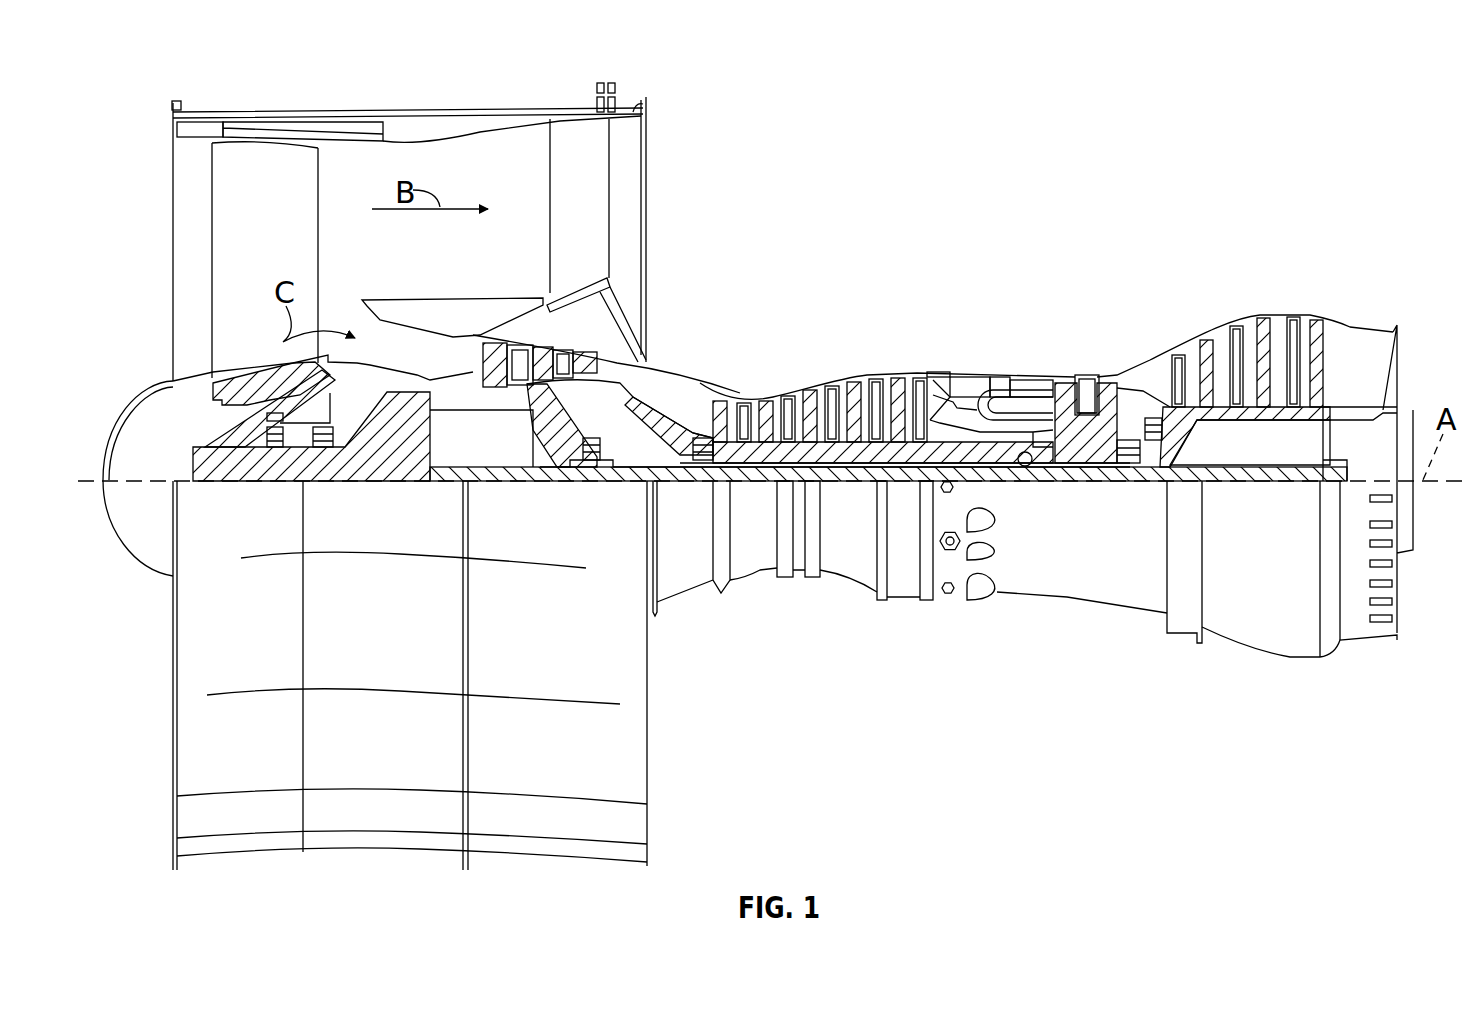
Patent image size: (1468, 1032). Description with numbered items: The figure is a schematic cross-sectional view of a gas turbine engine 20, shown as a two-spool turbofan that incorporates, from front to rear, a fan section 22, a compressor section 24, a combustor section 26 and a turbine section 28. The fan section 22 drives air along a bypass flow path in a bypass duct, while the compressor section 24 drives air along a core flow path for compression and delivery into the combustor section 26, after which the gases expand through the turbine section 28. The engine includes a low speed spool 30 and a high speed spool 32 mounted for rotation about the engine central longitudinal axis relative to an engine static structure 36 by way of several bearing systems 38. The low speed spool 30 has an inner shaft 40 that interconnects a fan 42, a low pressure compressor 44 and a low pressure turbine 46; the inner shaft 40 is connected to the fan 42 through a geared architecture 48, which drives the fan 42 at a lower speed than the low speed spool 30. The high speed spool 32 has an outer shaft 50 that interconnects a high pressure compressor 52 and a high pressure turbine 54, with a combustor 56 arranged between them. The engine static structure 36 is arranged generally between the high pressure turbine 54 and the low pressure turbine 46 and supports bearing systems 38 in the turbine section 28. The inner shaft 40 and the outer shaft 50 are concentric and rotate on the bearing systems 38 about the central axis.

The gas turbine engine 20 is at (1222, 147).
The fan section 22 is at (278, 100).
The compressor section 24 is at (887, 362).
The combustor section 26 is at (990, 353).
The turbine section 28 is at (1247, 363).
The low speed spool 30 is at (866, 488).
The high speed spool 32 is at (917, 420).
The engine static structure 36 is at (905, 603).
The bearing systems 38 is at (273, 442).
The inner shaft 40 is at (660, 477).
The fan 42 is at (292, 245).
The low pressure compressor 44 is at (560, 358).
The low pressure turbine 46 is at (1255, 338).
The geared architecture 48 is at (413, 445).
The outer shaft 50 is at (1031, 466).
The high pressure compressor 52 is at (827, 447).
The high pressure turbine 54 is at (1087, 375).
The combustor 56 is at (1010, 397).